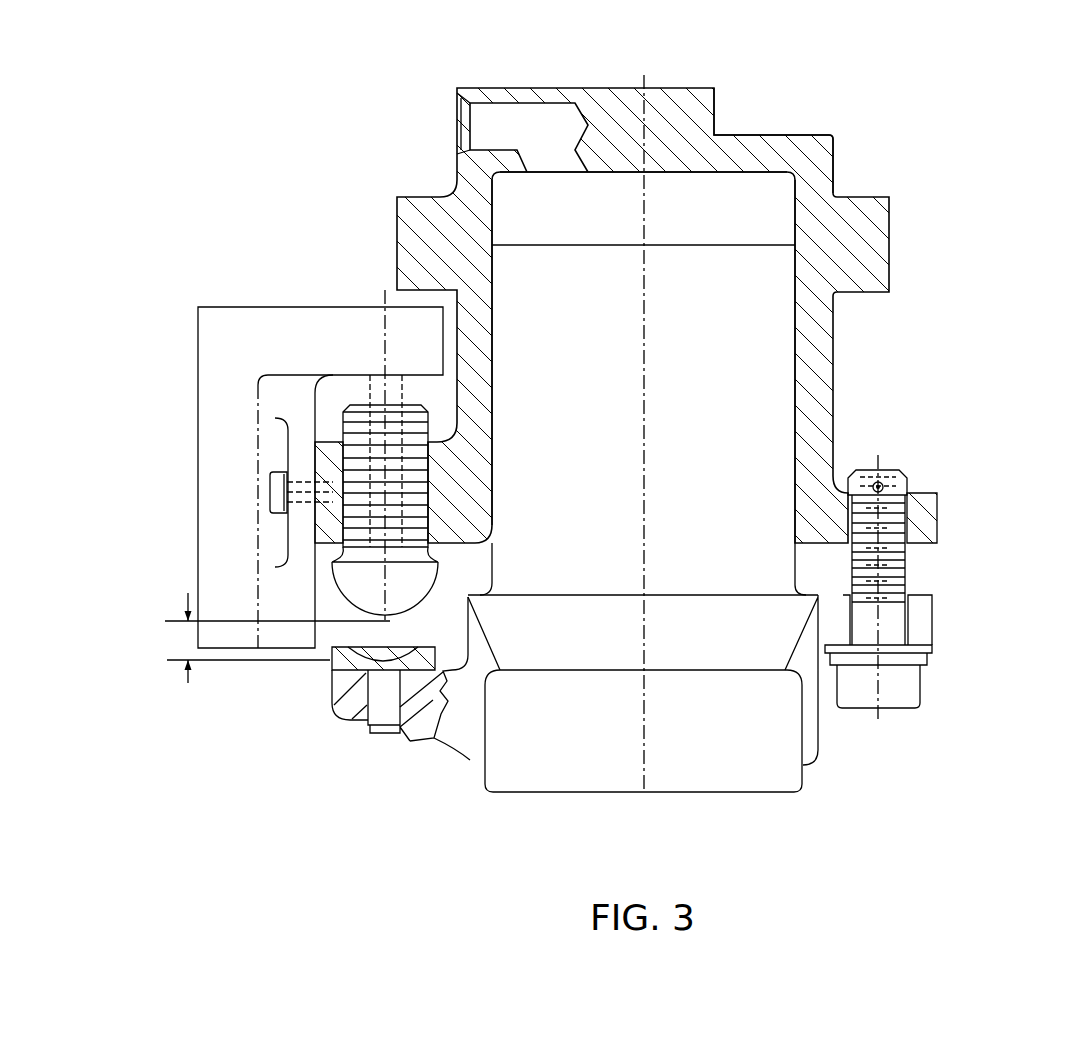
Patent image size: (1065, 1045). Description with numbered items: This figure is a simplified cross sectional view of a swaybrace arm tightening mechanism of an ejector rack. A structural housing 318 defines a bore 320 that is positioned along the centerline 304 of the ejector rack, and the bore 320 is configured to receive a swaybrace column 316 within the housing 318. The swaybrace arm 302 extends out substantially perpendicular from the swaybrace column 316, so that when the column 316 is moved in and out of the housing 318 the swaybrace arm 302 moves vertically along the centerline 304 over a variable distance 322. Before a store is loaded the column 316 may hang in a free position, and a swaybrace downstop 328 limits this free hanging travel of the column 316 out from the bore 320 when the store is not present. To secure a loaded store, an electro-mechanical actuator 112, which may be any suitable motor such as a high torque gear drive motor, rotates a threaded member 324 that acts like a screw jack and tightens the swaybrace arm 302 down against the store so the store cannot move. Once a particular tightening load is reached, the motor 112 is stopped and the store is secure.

The electro-mechanical actuator 112 is at (198, 347).
The swaybrace arm 302 is at (795, 792).
The centerline 304 is at (647, 85).
The swaybrace column 316 is at (753, 243).
The structural housing 318 is at (777, 135).
The bore 320 is at (796, 358).
The variable distance 322 is at (180, 640).
The threaded member 324 is at (357, 397).
The swaybrace downstop 328 is at (922, 668).